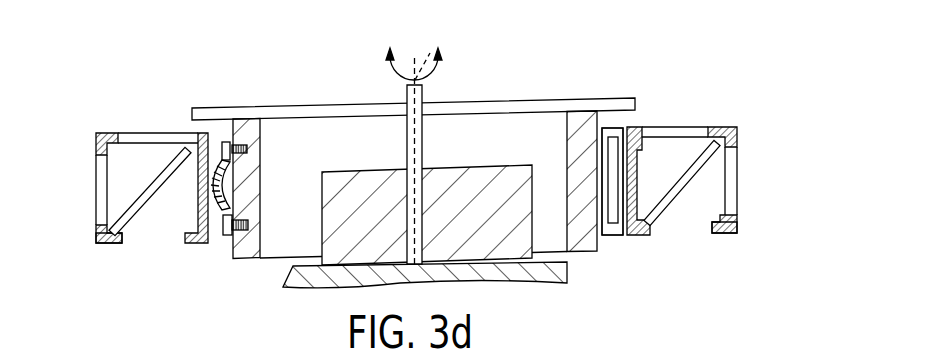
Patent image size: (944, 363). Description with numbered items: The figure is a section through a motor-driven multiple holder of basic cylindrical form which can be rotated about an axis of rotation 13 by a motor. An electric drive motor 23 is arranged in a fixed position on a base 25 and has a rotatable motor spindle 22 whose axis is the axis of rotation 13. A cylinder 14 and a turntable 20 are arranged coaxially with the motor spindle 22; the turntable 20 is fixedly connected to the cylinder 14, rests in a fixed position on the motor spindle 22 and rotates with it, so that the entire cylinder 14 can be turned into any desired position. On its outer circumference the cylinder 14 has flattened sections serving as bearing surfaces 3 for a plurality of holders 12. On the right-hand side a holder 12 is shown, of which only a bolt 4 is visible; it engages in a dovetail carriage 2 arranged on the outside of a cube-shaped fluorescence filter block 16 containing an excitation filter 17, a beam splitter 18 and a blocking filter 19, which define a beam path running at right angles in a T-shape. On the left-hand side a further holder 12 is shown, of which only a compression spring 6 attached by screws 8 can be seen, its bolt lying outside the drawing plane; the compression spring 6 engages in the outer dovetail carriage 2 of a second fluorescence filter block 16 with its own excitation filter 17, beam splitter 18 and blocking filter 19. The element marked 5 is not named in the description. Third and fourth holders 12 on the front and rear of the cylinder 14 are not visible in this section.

The dovetail carriage 2 is at (215, 236).
The bearing surface 3 is at (423, 194).
The bolt 4 is at (607, 237).
The pivot pin 5 is at (613, 223).
The compression spring 6 is at (225, 212).
The screw 8 is at (250, 225).
The holder 12 is at (216, 150).
The axis of rotation 13 is at (414, 53).
The cylinder 14 is at (253, 158).
The fluorescence filter block 16 is at (108, 243).
The excitation filter 17 is at (102, 198).
The beam splitter 18 is at (145, 200).
The blocking filter 19 is at (147, 138).
The turntable 20 is at (527, 102).
The motor spindle 22 is at (422, 95).
The electric drive motor 23 is at (528, 225).
The base 25 is at (520, 273).